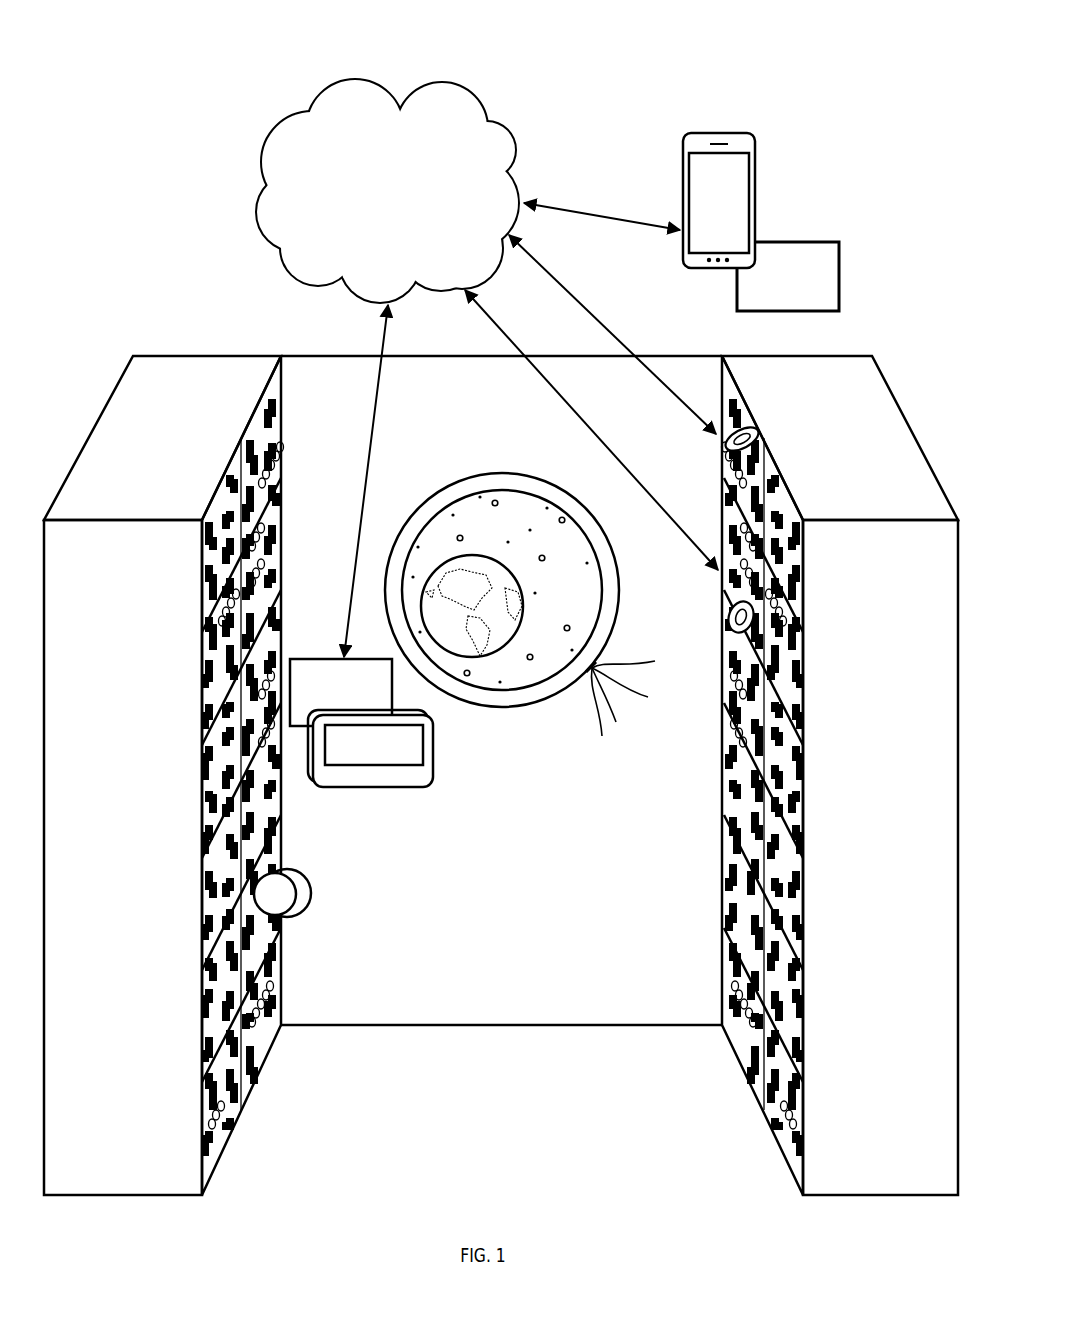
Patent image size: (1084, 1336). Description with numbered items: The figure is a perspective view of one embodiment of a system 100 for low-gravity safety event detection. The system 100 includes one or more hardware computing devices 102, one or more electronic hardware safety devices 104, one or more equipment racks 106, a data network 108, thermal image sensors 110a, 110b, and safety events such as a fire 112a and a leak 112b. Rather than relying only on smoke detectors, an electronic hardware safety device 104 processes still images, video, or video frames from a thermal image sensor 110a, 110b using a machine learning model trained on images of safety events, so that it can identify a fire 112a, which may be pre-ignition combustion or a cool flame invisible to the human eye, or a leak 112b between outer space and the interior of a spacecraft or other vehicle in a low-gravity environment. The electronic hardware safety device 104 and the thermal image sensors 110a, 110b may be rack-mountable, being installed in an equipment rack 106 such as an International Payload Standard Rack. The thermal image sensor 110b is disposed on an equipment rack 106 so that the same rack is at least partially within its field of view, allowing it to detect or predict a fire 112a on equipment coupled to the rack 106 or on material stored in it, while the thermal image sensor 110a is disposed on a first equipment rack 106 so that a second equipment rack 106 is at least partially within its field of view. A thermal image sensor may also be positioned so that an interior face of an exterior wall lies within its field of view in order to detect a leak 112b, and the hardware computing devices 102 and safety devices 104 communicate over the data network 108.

The system 100 is at (142, 29).
The hardware computing device 102 is at (683, 186).
The electronic hardware safety device 104 is at (771, 288).
The equipment rack 106 is at (184, 421).
The data network 108 is at (371, 214).
The thermal image sensor 110a is at (729, 612).
The thermal image sensor 110b is at (755, 436).
The fire 112a is at (300, 876).
The leak 112b is at (597, 662).